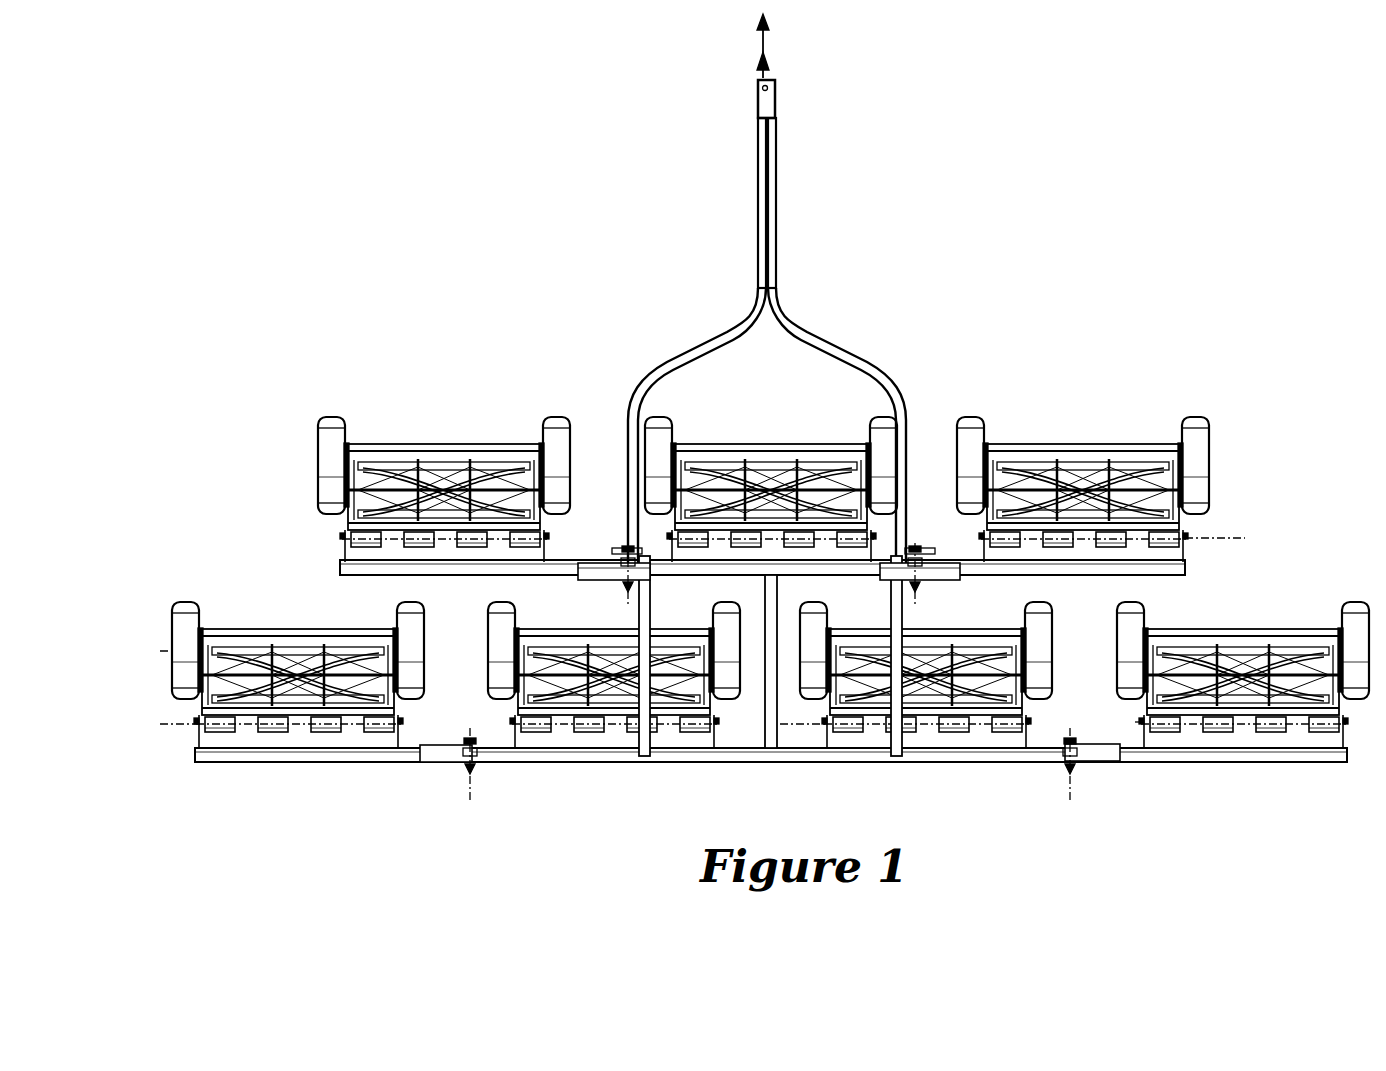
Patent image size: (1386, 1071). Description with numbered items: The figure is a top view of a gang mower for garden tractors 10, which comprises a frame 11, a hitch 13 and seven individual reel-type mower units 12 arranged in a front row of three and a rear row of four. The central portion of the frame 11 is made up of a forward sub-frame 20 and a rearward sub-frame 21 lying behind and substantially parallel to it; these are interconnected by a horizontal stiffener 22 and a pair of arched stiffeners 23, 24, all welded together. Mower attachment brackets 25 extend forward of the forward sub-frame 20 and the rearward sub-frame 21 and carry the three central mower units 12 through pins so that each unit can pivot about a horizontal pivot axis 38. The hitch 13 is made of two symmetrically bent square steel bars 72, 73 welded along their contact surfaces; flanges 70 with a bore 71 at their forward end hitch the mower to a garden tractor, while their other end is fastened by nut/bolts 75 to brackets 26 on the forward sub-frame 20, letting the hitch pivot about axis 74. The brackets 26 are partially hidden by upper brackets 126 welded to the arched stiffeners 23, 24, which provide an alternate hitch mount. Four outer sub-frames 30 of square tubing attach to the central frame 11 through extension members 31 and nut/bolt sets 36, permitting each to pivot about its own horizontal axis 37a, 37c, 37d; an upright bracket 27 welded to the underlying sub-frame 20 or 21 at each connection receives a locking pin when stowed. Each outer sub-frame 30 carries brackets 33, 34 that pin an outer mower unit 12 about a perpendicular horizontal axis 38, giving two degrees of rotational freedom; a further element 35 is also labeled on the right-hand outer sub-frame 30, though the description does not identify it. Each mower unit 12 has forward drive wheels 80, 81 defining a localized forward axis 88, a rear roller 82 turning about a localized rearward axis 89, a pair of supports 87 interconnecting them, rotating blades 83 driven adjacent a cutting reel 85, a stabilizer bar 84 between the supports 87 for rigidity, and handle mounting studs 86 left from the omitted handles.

The gang mower for garden tractors 10 is at (943, 235).
The frame 11 is at (858, 765).
The reel-type mower unit 12 is at (473, 440).
The hitch 13 is at (678, 365).
The forward sub-frame 20 is at (790, 575).
The rearward sub-frame 21 is at (690, 762).
The horizontal stiffener 22 is at (770, 762).
The arched stiffener 23 is at (645, 758).
The arched stiffener 24 is at (896, 758).
The mower attachment bracket 25 is at (687, 560).
The bracket 26 is at (645, 560).
The upright bracket 27 is at (580, 572).
The outer sub-frame 30 is at (446, 578).
The extension member 31 is at (1107, 756).
The bracket 33 is at (1243, 762).
The bracket 34 is at (1341, 771).
The bracket 35 is at (1234, 773).
The nut/bolt set 36 is at (1068, 768).
The horizontal axis 37a is at (917, 590).
The horizontal axis 37c is at (472, 800).
The horizontal axis 37d is at (626, 606).
The horizontal pivot axis 38 is at (1223, 540).
The flange 70 is at (776, 88).
The bore 71 is at (758, 96).
The square steel bar 72 is at (758, 210).
The square steel bar 73 is at (777, 195).
The axis 74 is at (626, 542).
The nut/bolt 75 is at (610, 548).
The forward drive wheel 80 is at (653, 622).
The forward drive wheel 81 is at (836, 630).
The rear roller 82 is at (786, 768).
The rotating blade 83 is at (1243, 712).
The stabilizer bar 84 is at (1243, 648).
The cutting reel 85 is at (1208, 624).
The handle mounting stud 86 is at (1244, 630).
The support 87 is at (1231, 702).
The localized forward axis 88 is at (166, 700).
The localized rearward axis 89 is at (196, 748).
The upper bracket 126 is at (648, 572).